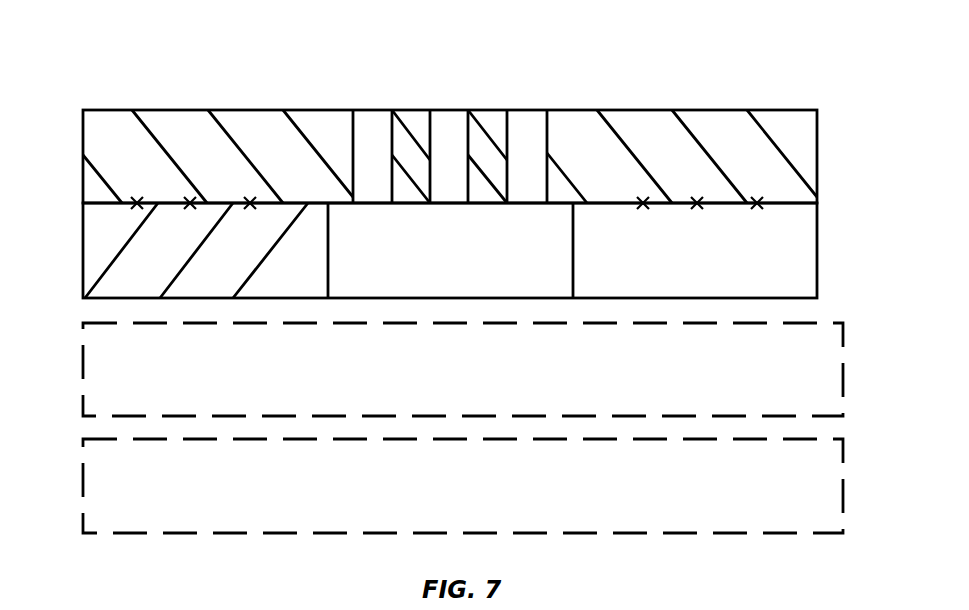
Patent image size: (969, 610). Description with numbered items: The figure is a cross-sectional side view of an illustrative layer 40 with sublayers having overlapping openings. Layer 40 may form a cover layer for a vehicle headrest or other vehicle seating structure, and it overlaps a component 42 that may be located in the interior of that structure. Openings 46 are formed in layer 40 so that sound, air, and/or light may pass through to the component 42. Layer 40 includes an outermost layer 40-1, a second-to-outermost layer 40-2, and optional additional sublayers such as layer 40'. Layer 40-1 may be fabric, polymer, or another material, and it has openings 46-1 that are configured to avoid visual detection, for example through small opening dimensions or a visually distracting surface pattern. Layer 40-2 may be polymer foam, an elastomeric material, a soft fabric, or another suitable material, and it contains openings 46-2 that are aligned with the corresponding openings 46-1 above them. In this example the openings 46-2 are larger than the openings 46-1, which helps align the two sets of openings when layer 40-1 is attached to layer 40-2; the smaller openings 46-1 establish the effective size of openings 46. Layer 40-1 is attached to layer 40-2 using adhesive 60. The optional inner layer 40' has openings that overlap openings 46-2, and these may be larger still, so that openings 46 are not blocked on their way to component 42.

The layer 40 is at (463, 212).
The outermost layer 40-1 is at (808, 151).
The second-to-outermost layer 40-2 is at (808, 254).
The optional additional sublayer 40' is at (499, 369).
The component 42 is at (843, 481).
The openings 46 is at (334, 58).
The openings in layer 40-1 46-1 is at (370, 110).
The openings in layer 40-2 46-2 is at (525, 215).
The adhesive 60 is at (250, 203).